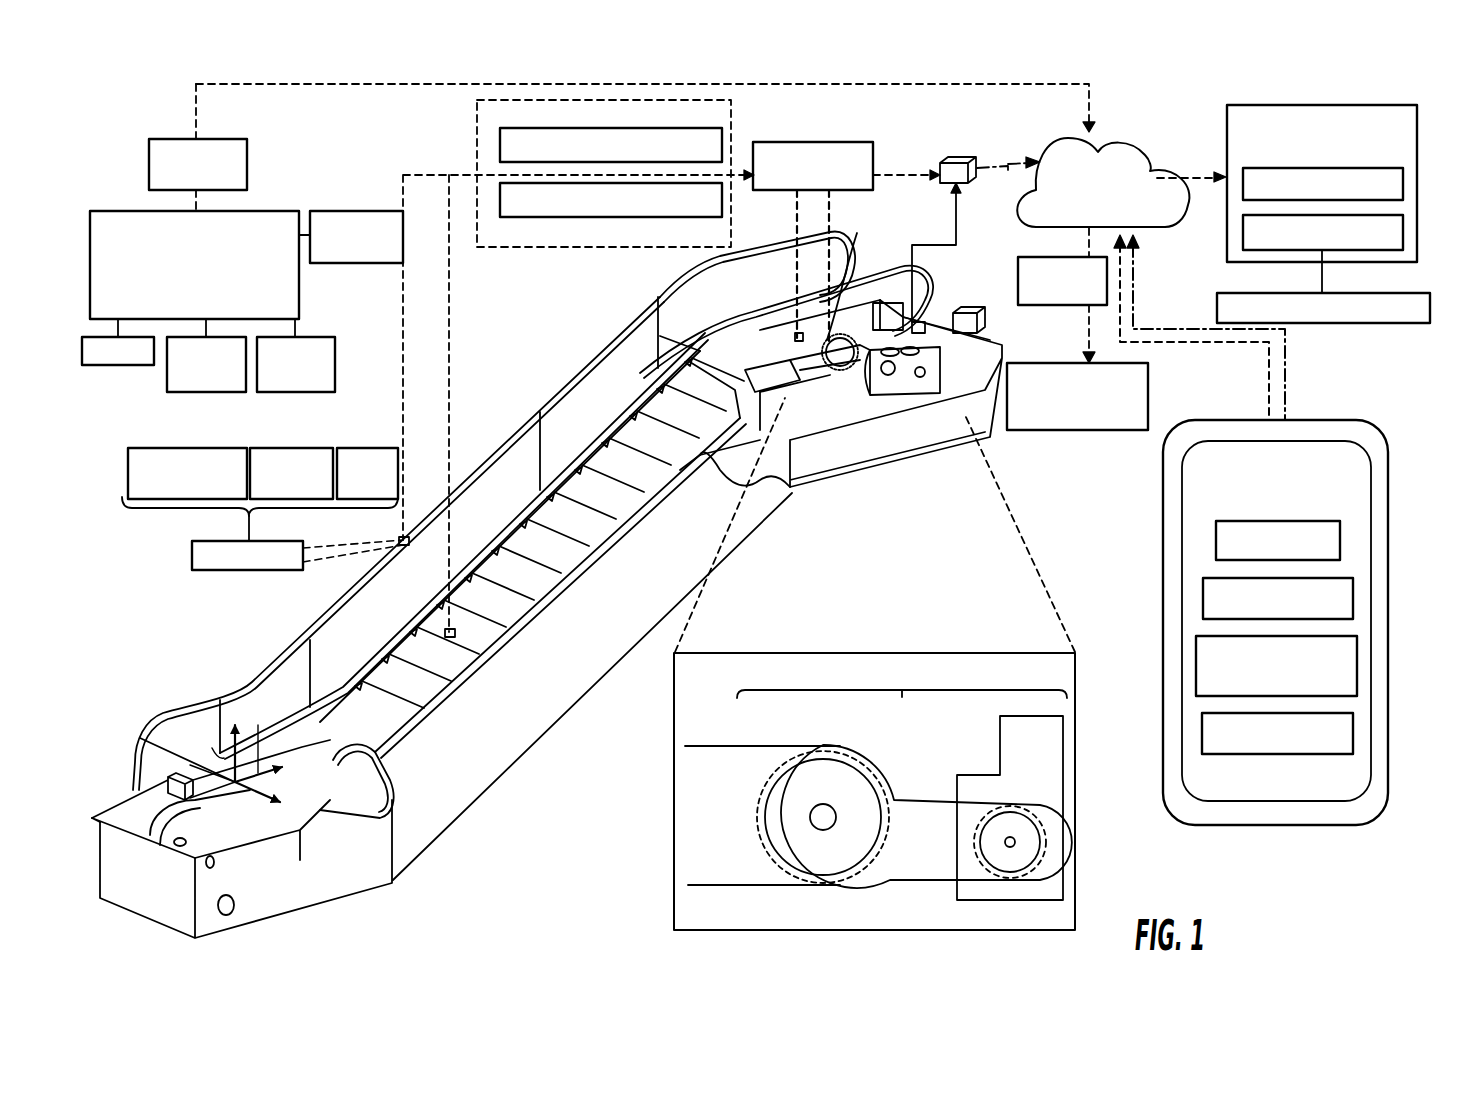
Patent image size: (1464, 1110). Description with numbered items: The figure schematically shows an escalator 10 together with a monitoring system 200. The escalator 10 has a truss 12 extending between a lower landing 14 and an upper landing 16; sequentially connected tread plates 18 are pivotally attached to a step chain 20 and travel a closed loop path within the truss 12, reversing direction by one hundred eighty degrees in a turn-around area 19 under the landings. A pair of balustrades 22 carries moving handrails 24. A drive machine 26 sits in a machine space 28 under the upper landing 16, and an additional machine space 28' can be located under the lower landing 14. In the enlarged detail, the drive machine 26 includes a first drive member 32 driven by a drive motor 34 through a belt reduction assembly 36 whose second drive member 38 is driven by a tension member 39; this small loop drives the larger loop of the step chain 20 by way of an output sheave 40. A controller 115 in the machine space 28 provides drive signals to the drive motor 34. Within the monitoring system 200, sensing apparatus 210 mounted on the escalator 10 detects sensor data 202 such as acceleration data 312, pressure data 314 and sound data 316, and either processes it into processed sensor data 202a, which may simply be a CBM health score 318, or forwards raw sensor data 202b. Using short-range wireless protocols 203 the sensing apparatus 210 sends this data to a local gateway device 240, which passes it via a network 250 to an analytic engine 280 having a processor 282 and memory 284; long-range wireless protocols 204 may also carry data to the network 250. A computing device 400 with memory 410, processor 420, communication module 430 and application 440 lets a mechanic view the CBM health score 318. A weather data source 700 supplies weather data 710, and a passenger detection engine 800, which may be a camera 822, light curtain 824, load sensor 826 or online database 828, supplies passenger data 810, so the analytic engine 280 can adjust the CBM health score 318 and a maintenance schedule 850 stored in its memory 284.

The escalator 10 is at (538, 360).
The truss 12 is at (850, 453).
The lower landing 14 is at (130, 792).
The upper landing 16 is at (1012, 345).
The tread plates 18 is at (525, 590).
The turn-around area 19 is at (860, 744).
The step chain 20 is at (783, 337).
The balustrades 22 is at (130, 730).
The moving handrails 24 is at (315, 714).
The drive machine 26 is at (891, 546).
The machine space 28 is at (859, 295).
The additional machine space 28' is at (188, 844).
The first drive member 32 is at (975, 838).
The drive motor 34 is at (957, 895).
The belt reduction assembly 36 is at (925, 828).
The second drive member 38 is at (760, 832).
The tension member 39 is at (910, 777).
The output sheave 40 is at (740, 788).
The controller 115 is at (912, 330).
The monitoring system 200 is at (338, 162).
The sensor data 202 is at (222, 571).
The processed sensor data 202a is at (558, 128).
The raw sensor data 202b is at (558, 217).
The short-range wireless protocols 203 is at (410, 173).
The long-range wireless protocols 204 is at (978, 164).
The sensing apparatus 210 is at (406, 548).
The local gateway device 240 is at (942, 184).
The network 250 is at (1145, 232).
The analytic engine 280 is at (1227, 152).
The processor 282 is at (1403, 188).
The memory 284 is at (1248, 251).
The acceleration data 312 is at (188, 448).
The pressure data 314 is at (279, 448).
The sound data 316 is at (349, 448).
The CBM health score 318 is at (826, 142).
The computing device 400 is at (1163, 497).
The memory 410 is at (1216, 533).
The processor 420 is at (1203, 590).
The communication module 430 is at (1196, 656).
The application 440 is at (1202, 723).
The weather data source 700 is at (1148, 405).
The weather data 710 is at (1066, 257).
The passenger detection engine 800 is at (270, 211).
The passenger data 810 is at (182, 139).
The camera 822 is at (140, 366).
The light curtain 824 is at (218, 393).
The load sensor 826 is at (315, 393).
The online database 828 is at (352, 211).
The maintenance schedule 850 is at (1390, 324).